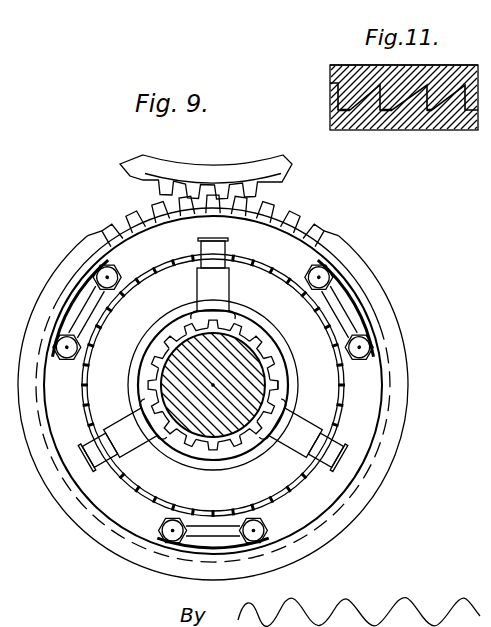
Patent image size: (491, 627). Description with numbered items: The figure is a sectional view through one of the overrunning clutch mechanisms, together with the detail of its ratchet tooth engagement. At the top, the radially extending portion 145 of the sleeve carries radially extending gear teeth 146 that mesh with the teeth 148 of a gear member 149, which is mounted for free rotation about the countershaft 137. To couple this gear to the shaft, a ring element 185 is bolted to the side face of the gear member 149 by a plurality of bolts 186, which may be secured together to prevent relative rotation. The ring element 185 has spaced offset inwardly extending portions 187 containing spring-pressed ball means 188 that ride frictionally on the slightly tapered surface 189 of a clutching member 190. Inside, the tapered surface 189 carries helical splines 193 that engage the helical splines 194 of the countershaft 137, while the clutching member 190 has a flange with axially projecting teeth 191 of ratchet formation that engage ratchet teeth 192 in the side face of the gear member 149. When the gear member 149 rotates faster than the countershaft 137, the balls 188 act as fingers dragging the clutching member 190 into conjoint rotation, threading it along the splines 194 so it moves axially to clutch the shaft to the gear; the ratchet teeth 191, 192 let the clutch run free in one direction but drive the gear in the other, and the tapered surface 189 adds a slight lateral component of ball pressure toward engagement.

In FIG. 9, the countershaft 137 is at (216, 435).
In FIG. 9, the radially extending portion 145 is at (196, 168).
In FIG. 9, the gear teeth 146 is at (158, 181).
In FIG. 9, the teeth 148 is at (105, 228).
In FIG. 9, the gear member 149 is at (302, 236).
In FIG. 11, the gear member 149 is at (336, 66).
In FIG. 9, the ring element 185 is at (368, 400).
In FIG. 9, the bolts 186 is at (62, 338).
In FIG. 9, the offset inwardly extending portions 187 is at (197, 300).
In FIG. 9, the spring-pressed ball means 188 is at (196, 318).
In FIG. 9, the tapered surface 189 is at (162, 330).
In FIG. 11, the clutching member 190 is at (348, 130).
In FIG. 11, the teeth 191 is at (412, 83).
In FIG. 9, the ratchet teeth 192 is at (288, 495).
In FIG. 11, the ratchet teeth 192 is at (425, 130).
In FIG. 9, the helical splines 193 is at (262, 350).
In FIG. 9, the helical splines 194 is at (278, 383).